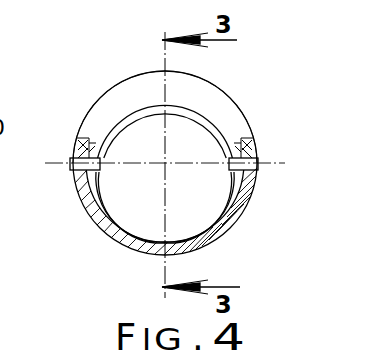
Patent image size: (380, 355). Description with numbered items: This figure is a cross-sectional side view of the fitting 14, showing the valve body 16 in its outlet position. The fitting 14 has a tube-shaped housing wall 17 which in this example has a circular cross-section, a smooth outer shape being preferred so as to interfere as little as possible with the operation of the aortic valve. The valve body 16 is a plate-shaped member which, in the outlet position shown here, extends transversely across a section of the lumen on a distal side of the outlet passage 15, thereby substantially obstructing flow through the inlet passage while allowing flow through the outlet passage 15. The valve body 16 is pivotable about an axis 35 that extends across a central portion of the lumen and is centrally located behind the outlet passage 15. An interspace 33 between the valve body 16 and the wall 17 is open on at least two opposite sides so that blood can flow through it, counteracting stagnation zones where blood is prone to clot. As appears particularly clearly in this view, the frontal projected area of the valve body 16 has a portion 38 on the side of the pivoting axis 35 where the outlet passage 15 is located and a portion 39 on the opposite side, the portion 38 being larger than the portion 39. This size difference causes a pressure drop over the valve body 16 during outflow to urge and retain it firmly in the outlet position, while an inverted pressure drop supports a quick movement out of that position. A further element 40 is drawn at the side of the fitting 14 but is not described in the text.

The fitting 14 is at (252, 77).
The outlet passage 15 is at (118, 86).
The valve body 16 is at (233, 112).
The housing wall 17 is at (83, 218).
The interspace 33 is at (123, 245).
The pivoting axis 35 is at (254, 170).
The frontal projected area portion 38 is at (146, 151).
The frontal projected area portion 39 is at (146, 201).
The left fastener block 40 is at (50, 180).